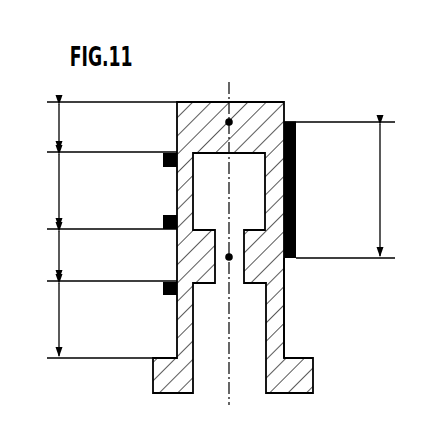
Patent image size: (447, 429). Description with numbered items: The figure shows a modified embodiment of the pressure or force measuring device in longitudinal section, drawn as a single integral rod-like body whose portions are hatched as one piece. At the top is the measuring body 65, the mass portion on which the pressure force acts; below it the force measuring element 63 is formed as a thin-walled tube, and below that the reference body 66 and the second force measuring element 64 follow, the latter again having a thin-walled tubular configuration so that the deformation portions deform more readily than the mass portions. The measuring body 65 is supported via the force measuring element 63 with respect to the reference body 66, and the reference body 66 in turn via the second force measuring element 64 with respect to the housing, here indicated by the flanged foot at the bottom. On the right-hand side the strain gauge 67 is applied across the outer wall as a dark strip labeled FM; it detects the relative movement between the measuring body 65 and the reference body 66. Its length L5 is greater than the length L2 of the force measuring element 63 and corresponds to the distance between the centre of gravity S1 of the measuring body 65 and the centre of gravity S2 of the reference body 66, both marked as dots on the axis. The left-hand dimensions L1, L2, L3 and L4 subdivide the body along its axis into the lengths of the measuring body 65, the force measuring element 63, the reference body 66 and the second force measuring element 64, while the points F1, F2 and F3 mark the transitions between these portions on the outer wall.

The force measuring element 63 is at (272, 207).
The second force measuring element 64 is at (285, 316).
The measuring body 65 is at (213, 108).
The reference body 66 is at (279, 263).
The strain gauge 67 is at (297, 132).
The magnetic field region FM is at (297, 168).
The centre of gravity of the measuring body S1 is at (232, 117).
The centre of gravity of the reference body S2 is at (230, 262).
The first force application point F1 is at (164, 158).
The second force application point F2 is at (164, 223).
The third force application point F3 is at (164, 290).
The length L1 is at (42, 127).
The length of the force measuring element L2 is at (42, 190).
The length L3 is at (42, 255).
The length L4 is at (42, 319).
The length of the strain gauge L5 is at (379, 190).